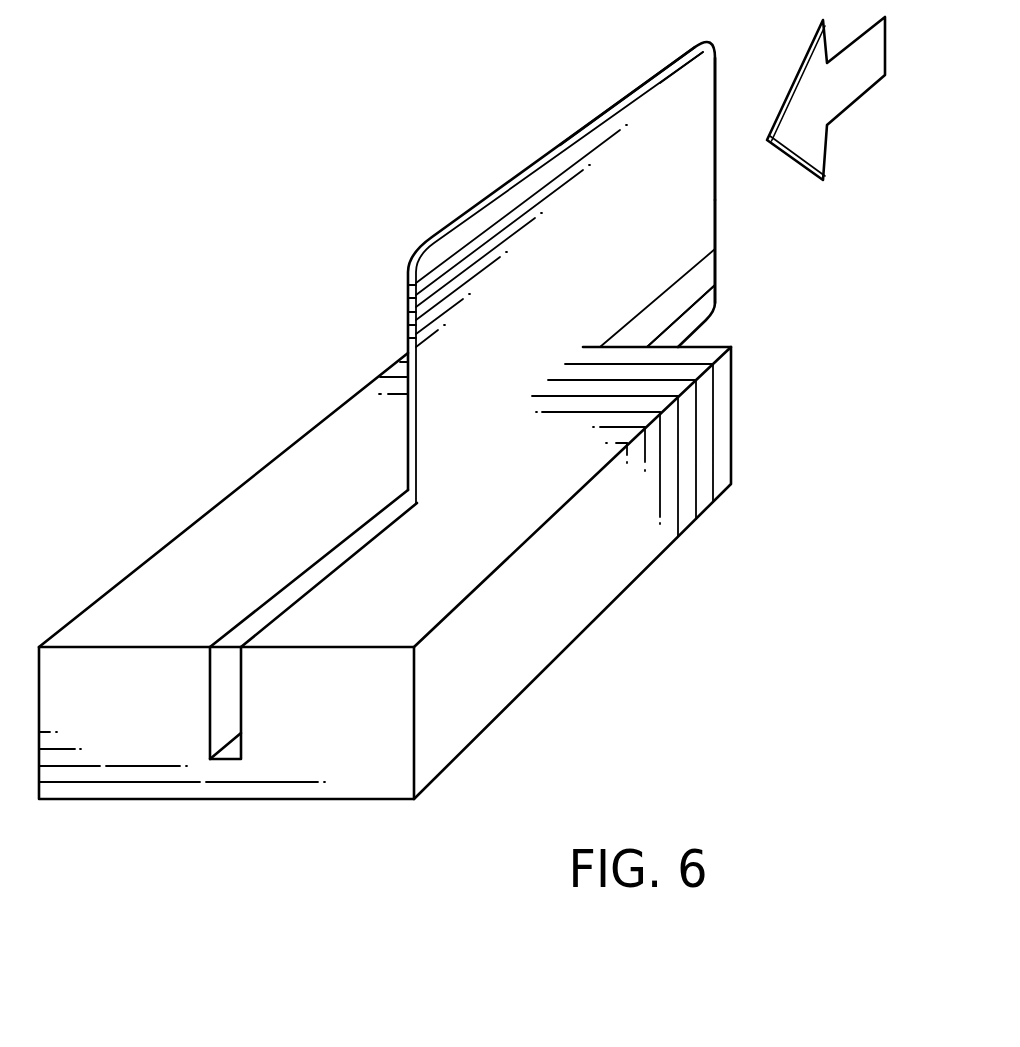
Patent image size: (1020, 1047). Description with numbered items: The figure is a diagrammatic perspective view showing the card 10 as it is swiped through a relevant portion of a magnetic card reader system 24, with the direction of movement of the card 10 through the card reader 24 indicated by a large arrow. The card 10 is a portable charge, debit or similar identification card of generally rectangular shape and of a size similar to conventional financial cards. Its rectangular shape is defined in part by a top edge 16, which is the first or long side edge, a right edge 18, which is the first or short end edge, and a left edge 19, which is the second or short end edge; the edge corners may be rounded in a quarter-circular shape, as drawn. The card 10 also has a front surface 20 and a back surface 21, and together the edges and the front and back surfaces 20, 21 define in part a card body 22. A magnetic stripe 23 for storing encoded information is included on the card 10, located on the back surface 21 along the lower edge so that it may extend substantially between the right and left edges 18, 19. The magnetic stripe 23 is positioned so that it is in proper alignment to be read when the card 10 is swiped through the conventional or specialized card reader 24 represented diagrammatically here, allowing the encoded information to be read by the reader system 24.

The card 10 is at (496, 55).
The top edge 16 is at (557, 150).
The right edge 18 is at (408, 305).
The left edge 19 is at (718, 100).
The front surface 20 is at (647, 78).
The back surface 21 is at (675, 103).
The card body 22 is at (657, 235).
The magnetic stripe 23 is at (672, 302).
The card reader system 24 is at (557, 602).